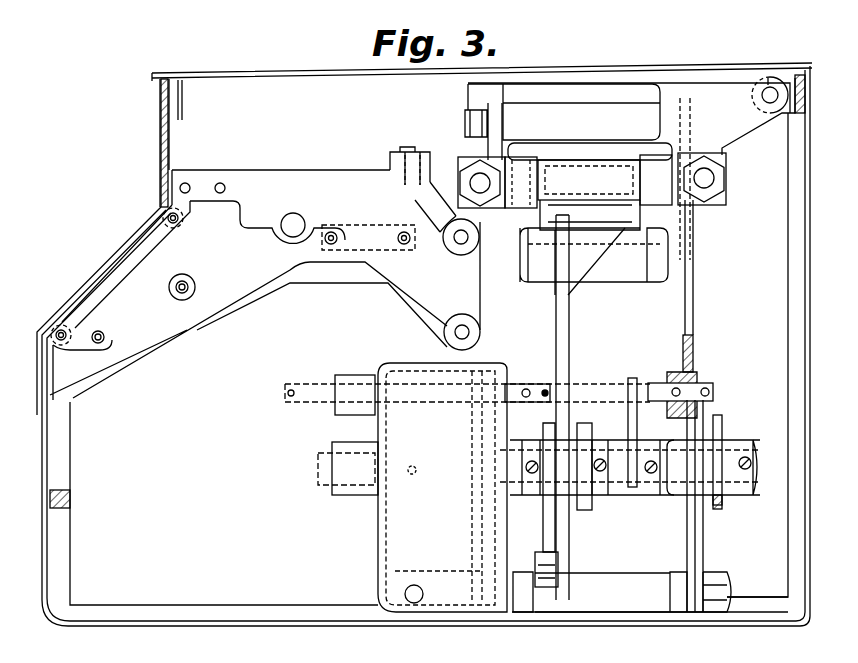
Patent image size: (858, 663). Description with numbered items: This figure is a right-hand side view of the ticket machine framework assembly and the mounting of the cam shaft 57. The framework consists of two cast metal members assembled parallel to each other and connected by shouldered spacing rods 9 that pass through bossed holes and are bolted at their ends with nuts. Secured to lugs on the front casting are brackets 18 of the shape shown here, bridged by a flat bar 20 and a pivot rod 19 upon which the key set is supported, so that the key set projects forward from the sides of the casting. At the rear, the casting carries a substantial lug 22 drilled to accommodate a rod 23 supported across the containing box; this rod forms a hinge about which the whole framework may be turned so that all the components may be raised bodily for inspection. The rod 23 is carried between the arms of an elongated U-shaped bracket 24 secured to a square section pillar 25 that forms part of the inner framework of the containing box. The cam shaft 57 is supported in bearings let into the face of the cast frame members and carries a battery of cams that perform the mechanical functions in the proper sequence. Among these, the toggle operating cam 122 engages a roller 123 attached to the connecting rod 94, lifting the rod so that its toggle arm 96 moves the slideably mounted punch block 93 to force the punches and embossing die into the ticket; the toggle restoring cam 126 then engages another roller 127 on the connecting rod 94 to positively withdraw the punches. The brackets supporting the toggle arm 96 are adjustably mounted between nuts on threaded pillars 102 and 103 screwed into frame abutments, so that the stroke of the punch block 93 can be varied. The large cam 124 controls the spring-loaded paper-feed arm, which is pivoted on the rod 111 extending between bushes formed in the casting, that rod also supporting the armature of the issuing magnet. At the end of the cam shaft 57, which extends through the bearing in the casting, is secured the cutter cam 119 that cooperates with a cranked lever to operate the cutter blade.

The shouldered spacing rod 9 is at (563, 122).
The bracket 18 is at (322, 265).
The pivot rod 19 is at (281, 231).
The flat bar 20 is at (395, 152).
The lug 22 is at (740, 128).
The rod 23 is at (762, 95).
The U-shaped bracket 24 is at (806, 93).
The square section pillar 25 is at (788, 257).
The cam shaft 57 is at (617, 458).
The punch block 93 is at (633, 270).
The connecting rod 94 is at (569, 327).
The toggle arm 96 is at (598, 178).
The pillar 102 is at (714, 178).
The pillar 103 is at (470, 160).
The rod 111 is at (713, 386).
The cutter cam 119 is at (722, 510).
The toggle operating cam 122 is at (588, 505).
The roller 123 is at (582, 386).
The cam 124 is at (637, 427).
The toggle restoring cam 126 is at (548, 519).
The roller 127 is at (553, 578).